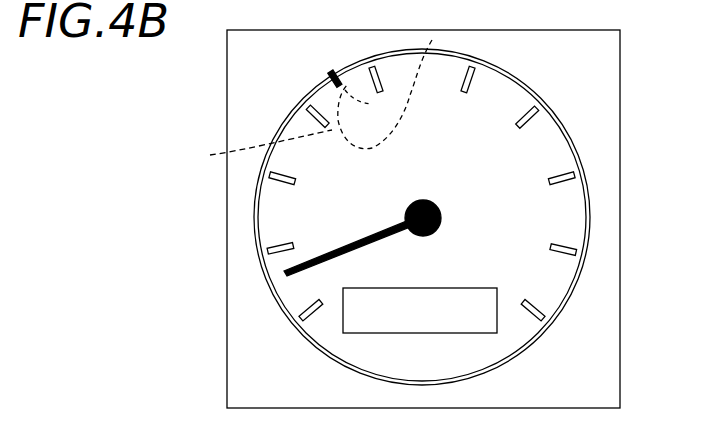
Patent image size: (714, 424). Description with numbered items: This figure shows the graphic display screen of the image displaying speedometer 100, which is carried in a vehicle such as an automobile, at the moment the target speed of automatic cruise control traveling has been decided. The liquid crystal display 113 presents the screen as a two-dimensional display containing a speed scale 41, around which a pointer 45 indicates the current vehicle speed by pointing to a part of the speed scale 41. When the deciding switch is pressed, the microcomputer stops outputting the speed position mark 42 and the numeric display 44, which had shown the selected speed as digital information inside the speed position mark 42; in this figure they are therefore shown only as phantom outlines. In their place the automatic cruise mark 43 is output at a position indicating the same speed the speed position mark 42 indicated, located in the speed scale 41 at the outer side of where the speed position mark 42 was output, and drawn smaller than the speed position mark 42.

The image displaying speedometer 100 is at (690, 63).
The liquid crystal display 113 is at (597, 118).
The speed scale 41 is at (567, 218).
The speed position mark 42 is at (432, 40).
The automatic cruise mark 43 is at (330, 80).
The numeric display 44 is at (210, 155).
The pointer 45 is at (300, 273).